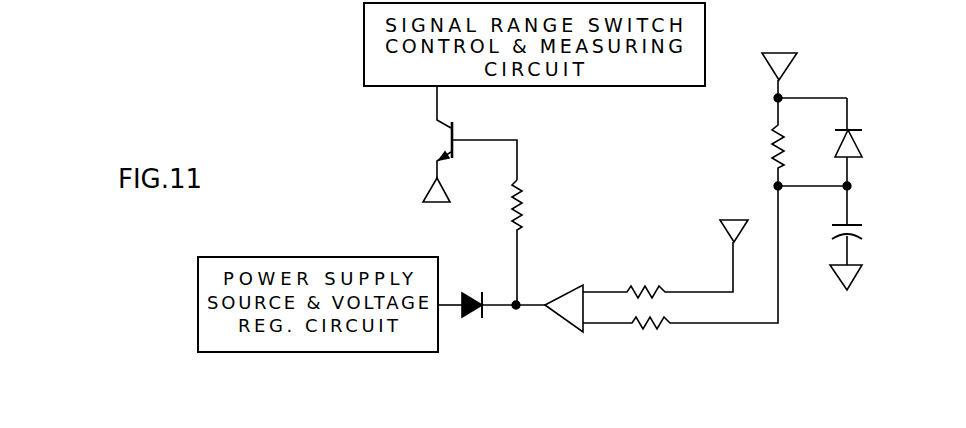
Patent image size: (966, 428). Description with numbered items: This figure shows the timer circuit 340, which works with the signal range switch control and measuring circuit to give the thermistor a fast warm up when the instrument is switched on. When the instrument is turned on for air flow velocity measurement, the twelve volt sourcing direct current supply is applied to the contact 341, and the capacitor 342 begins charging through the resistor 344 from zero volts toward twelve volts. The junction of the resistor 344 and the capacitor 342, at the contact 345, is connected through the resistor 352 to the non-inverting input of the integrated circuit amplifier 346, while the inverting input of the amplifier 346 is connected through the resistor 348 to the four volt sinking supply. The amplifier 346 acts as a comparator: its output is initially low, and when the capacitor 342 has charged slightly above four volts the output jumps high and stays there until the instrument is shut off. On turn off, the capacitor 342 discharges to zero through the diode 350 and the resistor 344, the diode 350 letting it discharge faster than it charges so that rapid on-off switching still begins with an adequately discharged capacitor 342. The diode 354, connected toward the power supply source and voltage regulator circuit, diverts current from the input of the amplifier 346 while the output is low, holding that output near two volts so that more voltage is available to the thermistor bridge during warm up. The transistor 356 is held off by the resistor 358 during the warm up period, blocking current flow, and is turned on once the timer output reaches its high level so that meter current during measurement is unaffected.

The timer circuit 340 is at (893, 59).
The contact 341 is at (781, 97).
The capacitor 342 is at (869, 210).
The resistor 344 is at (778, 130).
The contact 345 is at (772, 186).
The integrated circuit amplifier 346 is at (567, 290).
The resistor 348 is at (645, 291).
The diode 350 is at (870, 117).
The resistor 352 is at (652, 328).
The diode 354 is at (470, 283).
The transistor 356 is at (420, 138).
The resistor 358 is at (525, 207).